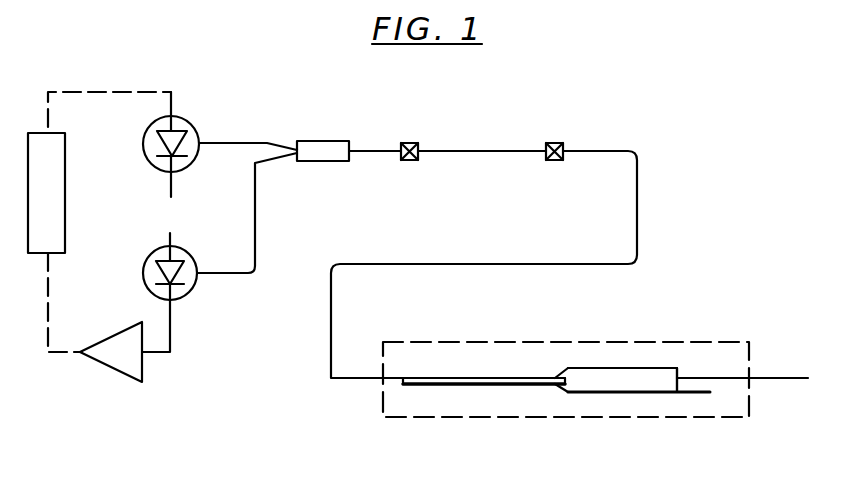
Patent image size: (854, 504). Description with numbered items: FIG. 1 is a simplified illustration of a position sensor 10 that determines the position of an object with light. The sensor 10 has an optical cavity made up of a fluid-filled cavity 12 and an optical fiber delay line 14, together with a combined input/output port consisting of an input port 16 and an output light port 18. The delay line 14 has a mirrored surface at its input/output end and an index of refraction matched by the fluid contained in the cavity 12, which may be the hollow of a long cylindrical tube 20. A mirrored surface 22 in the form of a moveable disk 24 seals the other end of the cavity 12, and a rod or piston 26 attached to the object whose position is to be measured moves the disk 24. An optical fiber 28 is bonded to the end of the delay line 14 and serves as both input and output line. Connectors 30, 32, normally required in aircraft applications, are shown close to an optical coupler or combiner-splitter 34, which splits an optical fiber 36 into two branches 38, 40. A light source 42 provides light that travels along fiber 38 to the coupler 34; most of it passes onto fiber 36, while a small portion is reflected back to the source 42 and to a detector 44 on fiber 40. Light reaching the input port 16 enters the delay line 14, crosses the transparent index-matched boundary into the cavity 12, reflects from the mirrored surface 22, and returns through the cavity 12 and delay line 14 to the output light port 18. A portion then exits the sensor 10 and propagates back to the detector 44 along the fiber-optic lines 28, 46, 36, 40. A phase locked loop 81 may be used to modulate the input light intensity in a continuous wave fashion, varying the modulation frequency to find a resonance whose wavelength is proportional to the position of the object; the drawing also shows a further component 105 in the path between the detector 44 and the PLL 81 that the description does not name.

The position sensor 10 is at (665, 342).
The optical cavity 12 is at (630, 389).
The optical fiber delay line 14 is at (464, 378).
The input port 16 is at (403, 381).
The output light port 18 is at (404, 383).
The long cylindrical tube 20 is at (590, 368).
The mirrored surface 22 is at (680, 375).
The moveable disk 24 is at (680, 378).
The rod or piston 26 is at (797, 378).
The optical fiber 28 is at (331, 352).
The connector 30 is at (413, 143).
The connector 32 is at (558, 143).
The optical coupler or combiner-splitter 34 is at (322, 141).
The optical fiber 36 is at (370, 151).
The fiber branch 38 is at (245, 143).
The fiber branch 40 is at (255, 253).
The light source 42 is at (146, 161).
The detector 44 is at (143, 273).
The fiber-optic line 46 is at (470, 151).
The phase locked loop 81 is at (65, 200).
The amplifier 105 is at (110, 370).